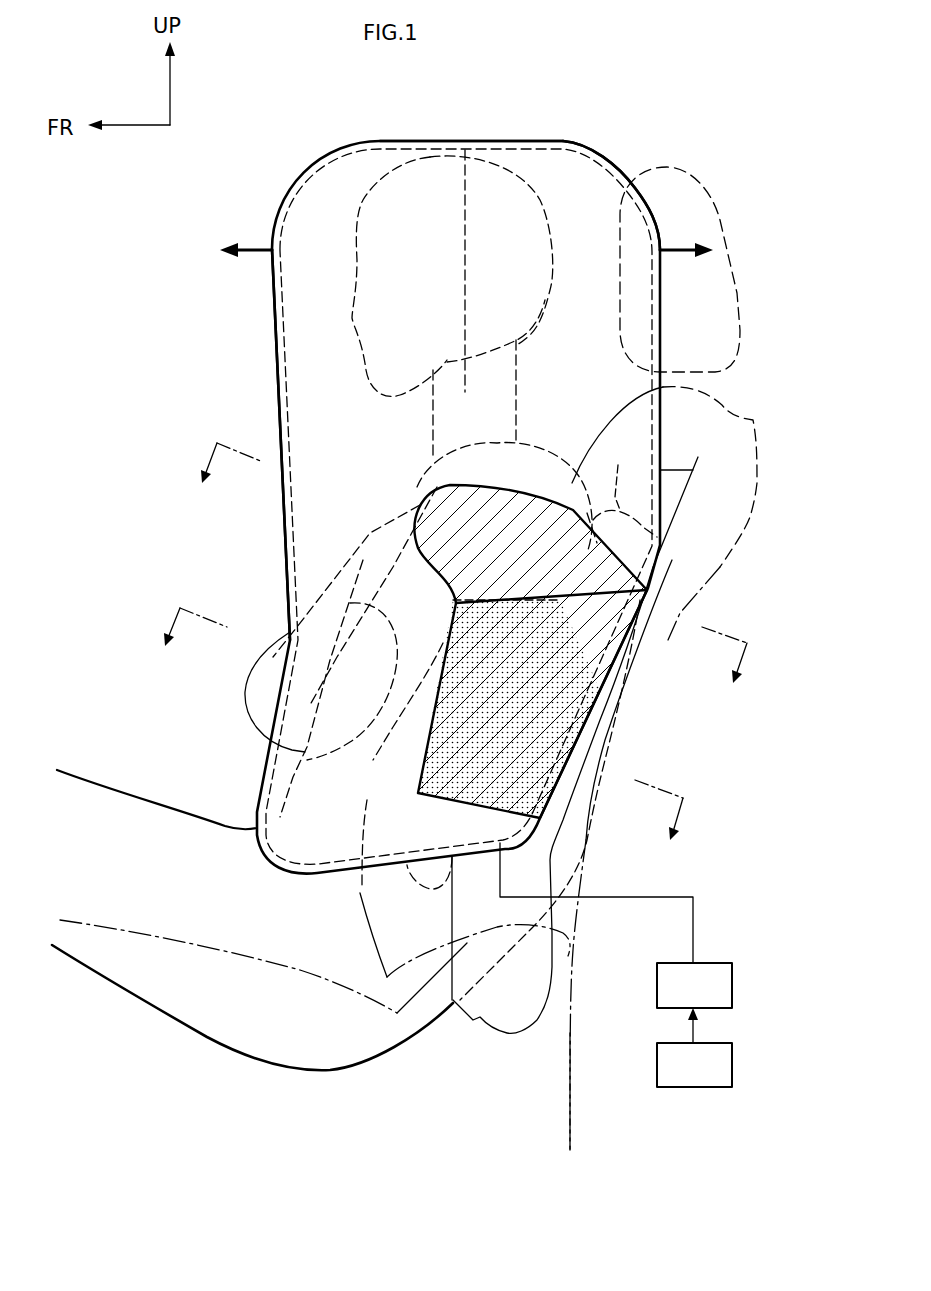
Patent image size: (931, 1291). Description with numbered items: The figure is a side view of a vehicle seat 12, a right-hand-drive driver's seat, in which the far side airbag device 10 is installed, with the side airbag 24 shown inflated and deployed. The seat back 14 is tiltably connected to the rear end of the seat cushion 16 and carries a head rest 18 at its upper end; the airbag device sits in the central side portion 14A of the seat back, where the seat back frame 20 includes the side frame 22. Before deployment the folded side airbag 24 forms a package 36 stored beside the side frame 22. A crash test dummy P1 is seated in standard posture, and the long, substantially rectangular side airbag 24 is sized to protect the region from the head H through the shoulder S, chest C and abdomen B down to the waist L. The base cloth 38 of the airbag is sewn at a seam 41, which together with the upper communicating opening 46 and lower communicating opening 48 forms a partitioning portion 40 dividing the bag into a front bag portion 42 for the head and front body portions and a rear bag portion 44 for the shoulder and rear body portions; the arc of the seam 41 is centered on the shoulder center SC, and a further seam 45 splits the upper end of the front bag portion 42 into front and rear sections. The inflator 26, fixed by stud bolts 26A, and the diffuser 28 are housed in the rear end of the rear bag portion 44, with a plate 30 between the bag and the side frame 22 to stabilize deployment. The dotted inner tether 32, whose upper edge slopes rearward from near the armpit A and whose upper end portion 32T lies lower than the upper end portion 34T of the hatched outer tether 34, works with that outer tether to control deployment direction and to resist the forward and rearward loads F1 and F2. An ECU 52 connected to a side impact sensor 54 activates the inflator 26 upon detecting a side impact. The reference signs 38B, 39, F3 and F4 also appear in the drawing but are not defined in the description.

The far side airbag device 10 is at (409, 471).
The vehicle seat 12 is at (578, 1122).
The seat back 14 is at (751, 603).
The central side portion 14A is at (712, 578).
The seat cushion 16 is at (162, 935).
The head rest 18 is at (738, 294).
The seat back frame 20 is at (703, 768).
The side frame 22 is at (703, 768).
The side airbag 24 is at (316, 165).
The inflator 26 is at (579, 800).
The stud bolts 26A is at (612, 655).
The diffuser 28 is at (575, 483).
The plate 30 is at (690, 486).
The inner tether 32 is at (358, 652).
The upper end portion of the front edge portion of the inner tether 32T is at (393, 737).
The outer tether 34 is at (488, 480).
The upper end portion of the distal end portion of the outer tether 34T is at (470, 487).
The package 36 is at (362, 890).
The base cloth 38 is at (624, 174).
The rear chamber upper portion 38B is at (587, 183).
The airbag upper edge 39 is at (534, 148).
The partitioning portion 40 is at (482, 650).
The seam 41 is at (482, 650).
The front bag portion 42 is at (317, 362).
The rear bag portion 44 is at (575, 690).
The seam 45 is at (466, 257).
The upper communicating opening 46 is at (639, 465).
The lower communicating opening 48 is at (387, 820).
The ECU 52 is at (657, 975).
The side impact sensor 54 is at (657, 1055).
The head H is at (392, 178).
The shoulder S is at (528, 513).
The center of the shoulder SC is at (472, 538).
The armpit A is at (597, 620).
The abdomen B is at (350, 733).
The chest C is at (365, 603).
The waist L is at (330, 823).
The crash test dummy P1 is at (146, 792).
The load F1 is at (254, 247).
The load F2 is at (680, 247).
The force F3 is at (418, 738).
The force F4 is at (467, 579).